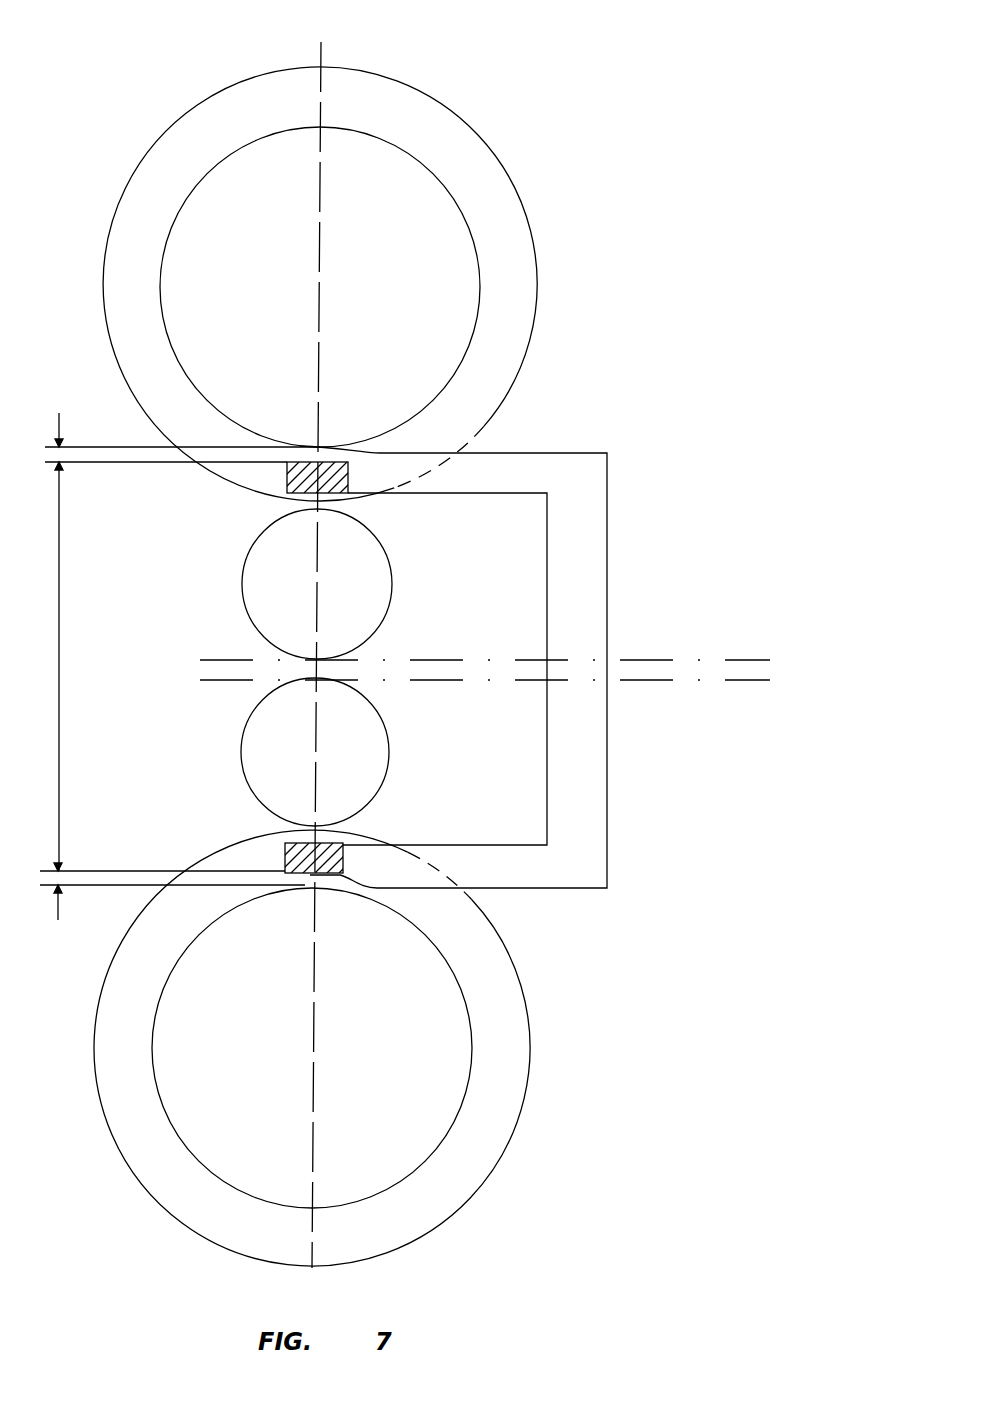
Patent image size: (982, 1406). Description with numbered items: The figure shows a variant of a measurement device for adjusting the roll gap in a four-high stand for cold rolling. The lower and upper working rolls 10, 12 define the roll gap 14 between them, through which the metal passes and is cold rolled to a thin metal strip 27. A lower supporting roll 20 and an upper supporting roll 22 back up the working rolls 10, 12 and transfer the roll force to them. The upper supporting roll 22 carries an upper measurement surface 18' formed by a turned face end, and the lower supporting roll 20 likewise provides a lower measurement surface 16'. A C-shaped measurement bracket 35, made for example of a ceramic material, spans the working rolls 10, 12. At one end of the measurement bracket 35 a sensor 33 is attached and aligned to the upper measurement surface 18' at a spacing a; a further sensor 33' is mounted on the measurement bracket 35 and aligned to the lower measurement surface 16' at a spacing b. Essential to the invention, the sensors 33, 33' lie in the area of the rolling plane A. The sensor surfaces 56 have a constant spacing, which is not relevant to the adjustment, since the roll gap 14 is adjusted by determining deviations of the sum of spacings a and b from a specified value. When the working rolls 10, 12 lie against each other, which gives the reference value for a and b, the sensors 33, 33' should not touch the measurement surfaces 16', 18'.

The rolling plane A is at (321, 50).
The upper supporting roll 22 is at (437, 307).
The upper measurement surface 18' is at (320, 287).
The lower supporting roll 20 is at (437, 998).
The lower measurement surface 16' is at (312, 1048).
The upper working roll 12 is at (370, 597).
The lower working roll 10 is at (370, 737).
The roll gap 14 is at (305, 663).
The thin metal strip 27 is at (645, 670).
The measurement bracket 35 is at (583, 732).
The sensor 33 is at (284, 497).
The further sensor 33' is at (346, 836).
The sensor surfaces 56 is at (317, 448).
The spacing a is at (170, 642).
The spacing b is at (161, 891).